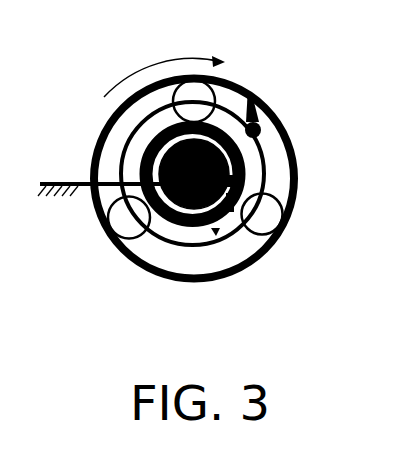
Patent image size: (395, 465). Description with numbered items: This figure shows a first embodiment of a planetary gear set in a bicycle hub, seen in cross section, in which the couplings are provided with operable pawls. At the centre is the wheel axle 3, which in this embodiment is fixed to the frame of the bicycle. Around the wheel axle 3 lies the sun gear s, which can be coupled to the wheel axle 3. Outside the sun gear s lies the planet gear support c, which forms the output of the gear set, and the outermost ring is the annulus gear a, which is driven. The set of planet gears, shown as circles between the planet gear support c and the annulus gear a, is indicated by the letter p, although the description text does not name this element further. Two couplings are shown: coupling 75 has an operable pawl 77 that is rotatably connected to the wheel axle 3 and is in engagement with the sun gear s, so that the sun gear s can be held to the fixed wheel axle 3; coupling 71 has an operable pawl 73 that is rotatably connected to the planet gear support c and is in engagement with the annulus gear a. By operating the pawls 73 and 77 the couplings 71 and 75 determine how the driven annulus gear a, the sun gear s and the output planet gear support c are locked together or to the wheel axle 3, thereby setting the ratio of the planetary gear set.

The wheel axle 3 is at (172, 170).
The coupling 71 is at (216, 173).
The operable pawl 73 is at (258, 112).
The coupling 75 is at (216, 234).
The operable pawl 77 is at (231, 222).
The sun gear s is at (247, 167).
The roller p is at (278, 203).
The planet gear support c is at (256, 217).
The annulus gear a is at (262, 252).